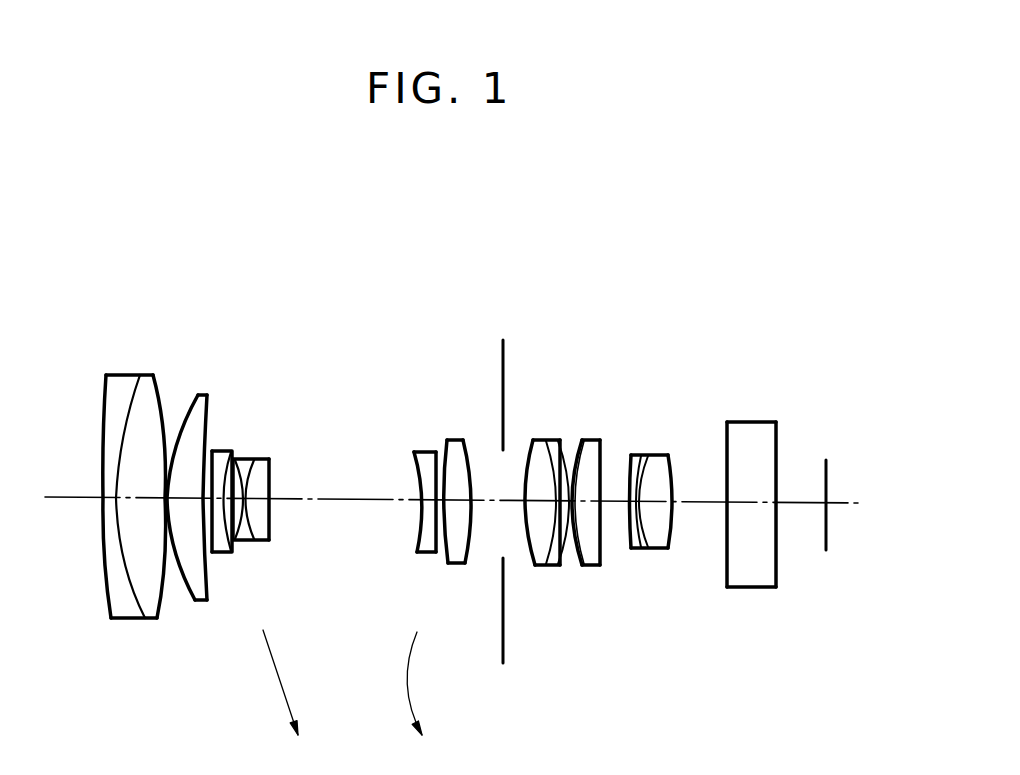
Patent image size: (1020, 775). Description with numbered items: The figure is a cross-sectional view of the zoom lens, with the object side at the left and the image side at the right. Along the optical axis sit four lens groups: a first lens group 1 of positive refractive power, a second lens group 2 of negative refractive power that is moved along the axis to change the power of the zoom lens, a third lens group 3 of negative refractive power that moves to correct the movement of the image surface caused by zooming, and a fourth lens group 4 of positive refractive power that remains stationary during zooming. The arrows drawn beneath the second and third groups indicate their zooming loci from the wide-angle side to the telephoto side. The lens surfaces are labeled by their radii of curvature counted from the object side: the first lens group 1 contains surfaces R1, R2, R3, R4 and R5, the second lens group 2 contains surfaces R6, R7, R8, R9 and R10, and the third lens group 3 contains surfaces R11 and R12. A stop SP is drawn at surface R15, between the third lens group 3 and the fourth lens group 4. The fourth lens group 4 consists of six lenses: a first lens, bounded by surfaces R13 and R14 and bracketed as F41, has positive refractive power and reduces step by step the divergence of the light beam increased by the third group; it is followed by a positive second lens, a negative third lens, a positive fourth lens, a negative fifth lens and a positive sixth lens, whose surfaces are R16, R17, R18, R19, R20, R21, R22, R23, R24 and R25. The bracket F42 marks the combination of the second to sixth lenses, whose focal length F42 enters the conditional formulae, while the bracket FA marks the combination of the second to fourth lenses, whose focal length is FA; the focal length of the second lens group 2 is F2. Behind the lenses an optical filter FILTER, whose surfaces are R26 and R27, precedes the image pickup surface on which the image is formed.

The first lens group 1 is at (207, 352).
The second lens group 2 is at (288, 352).
The third lens group 3 is at (428, 352).
The fourth lens group 4 is at (707, 300).
The stop (aperture diaphragm) SP is at (477, 519).
The first radius of curvature R1 is at (110, 590).
The second radius of curvature R2 is at (150, 619).
The third radius of curvature R3 is at (161, 612).
The fourth radius of curvature R4 is at (188, 592).
The fifth radius of curvature R5 is at (206, 585).
The sixth radius of curvature R6 is at (214, 549).
The seventh radius of curvature R7 is at (233, 542).
The eighth radius of curvature R8 is at (221, 451).
The ninth radius of curvature R9 is at (253, 478).
The tenth radius of curvature R10 is at (271, 518).
The eleventh radius of curvature R11 is at (420, 538).
The twelfth radius of curvature R12 is at (437, 549).
The thirteenth radius of curvature R13 is at (447, 565).
The fourteenth radius of curvature R14 is at (470, 560).
The fifteenth radius of curvature R15 is at (503, 415).
The sixteenth radius of curvature R16 is at (526, 517).
The seventeenth radius of curvature R17 is at (548, 458).
The eighteenth radius of curvature R18 is at (549, 560).
The nineteenth radius of curvature R19 is at (567, 552).
The twentieth radius of curvature R20 is at (580, 556).
The twenty-first radius of curvature R21 is at (603, 546).
The twenty-second radius of curvature R22 is at (630, 470).
The twenty-third radius of curvature R23 is at (650, 474).
The twenty-fourth radius of curvature R24 is at (640, 552).
The twenty-fifth radius of curvature R25 is at (674, 532).
The optical filter surface R26 is at (728, 440).
The twenty-seventh radius of curvature R27 is at (775, 440).
The focal length of the second lens group F2 is at (273, 478).
The focal length of front part of fourth group F41 is at (472, 352).
The focal length of the second to sixth lenses of the fourth lens group F42 is at (685, 357).
The focal length of the second to fourth lenses of the fourth lens group FA is at (597, 588).
The optical filter FILTER is at (750, 590).